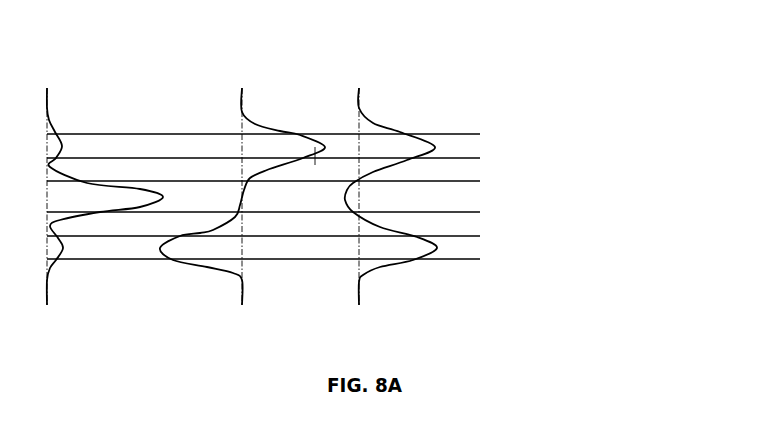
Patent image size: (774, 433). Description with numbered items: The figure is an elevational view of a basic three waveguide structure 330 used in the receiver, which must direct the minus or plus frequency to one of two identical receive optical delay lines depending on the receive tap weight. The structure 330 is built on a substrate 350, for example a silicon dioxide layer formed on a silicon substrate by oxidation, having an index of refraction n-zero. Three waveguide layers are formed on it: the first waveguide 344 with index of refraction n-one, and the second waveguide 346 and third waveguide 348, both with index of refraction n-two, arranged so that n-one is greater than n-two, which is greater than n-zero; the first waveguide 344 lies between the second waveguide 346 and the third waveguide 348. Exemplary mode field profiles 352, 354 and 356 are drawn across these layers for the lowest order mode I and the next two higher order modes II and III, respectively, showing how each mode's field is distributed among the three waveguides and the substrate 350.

The three waveguide structure 330 is at (404, 177).
The waveguide 1 344 is at (620, 199).
The waveguide 2 346 is at (622, 147).
The waveguide 3 348 is at (620, 251).
The substrate 350 is at (588, 104).
The mode field profile 352 is at (47, 110).
The mode field profile 354 is at (242, 112).
The mode field profile 356 is at (359, 110).